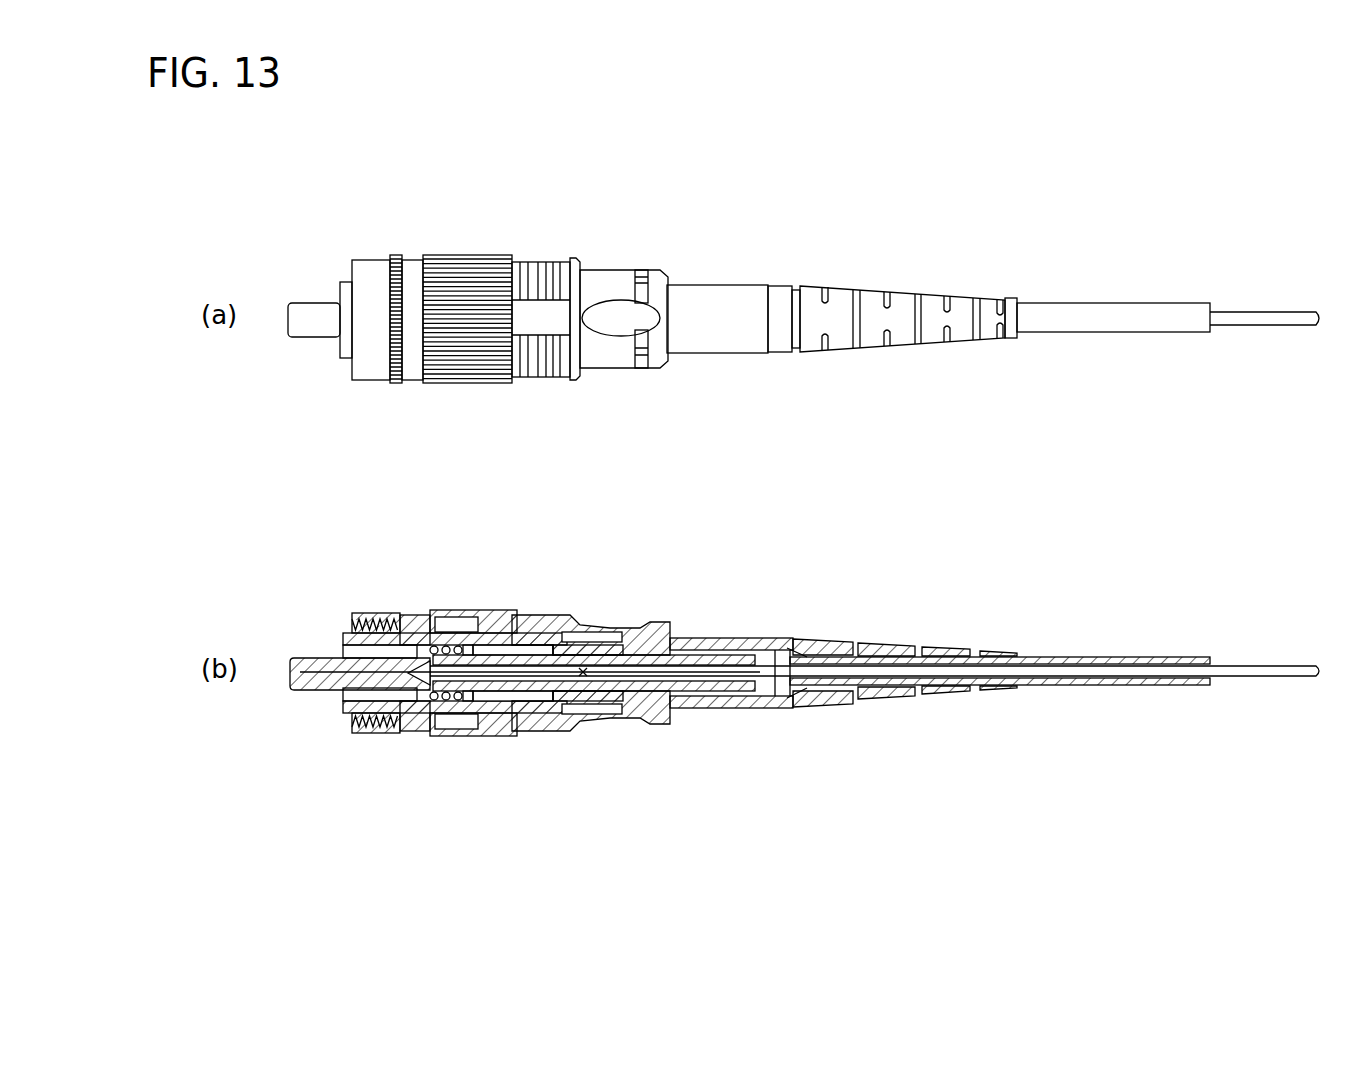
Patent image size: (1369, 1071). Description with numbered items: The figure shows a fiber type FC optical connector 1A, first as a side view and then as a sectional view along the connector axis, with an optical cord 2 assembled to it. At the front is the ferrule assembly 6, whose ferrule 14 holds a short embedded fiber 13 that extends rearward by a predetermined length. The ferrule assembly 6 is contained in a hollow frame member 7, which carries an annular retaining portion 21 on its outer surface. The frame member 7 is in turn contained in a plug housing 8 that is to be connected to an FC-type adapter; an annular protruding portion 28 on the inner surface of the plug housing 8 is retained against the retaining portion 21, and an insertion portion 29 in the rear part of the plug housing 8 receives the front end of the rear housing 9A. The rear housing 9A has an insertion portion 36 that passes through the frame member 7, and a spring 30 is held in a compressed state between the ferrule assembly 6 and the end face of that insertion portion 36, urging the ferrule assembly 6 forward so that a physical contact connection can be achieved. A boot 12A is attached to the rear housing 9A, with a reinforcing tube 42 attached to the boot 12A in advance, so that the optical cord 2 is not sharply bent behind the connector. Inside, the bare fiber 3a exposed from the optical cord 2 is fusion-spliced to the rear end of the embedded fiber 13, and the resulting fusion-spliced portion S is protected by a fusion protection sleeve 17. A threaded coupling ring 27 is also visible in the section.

The optical connector 1A is at (838, 265).
The ferrule assembly 6 is at (299, 346).
The ferrule 14 is at (312, 312).
The frame member 7 is at (350, 285).
The plug housing 8 is at (412, 368).
The rear housing 9A is at (607, 285).
The boot 12A is at (722, 300).
The reinforcing tube 42 is at (1087, 316).
The optical cord 2 is at (1255, 318).
The bare fiber 3a is at (640, 666).
The embedded fiber 13 is at (325, 692).
The fusion protection sleeve 17 is at (619, 692).
The retaining portion 21 is at (388, 613).
The screw ring 27 is at (348, 718).
The protruding portion 28 is at (410, 735).
The insertion portion 29 is at (442, 616).
The spring 30 is at (417, 614).
The insertion portion 36 is at (521, 654).
The fusion-spliced portion S is at (588, 692).